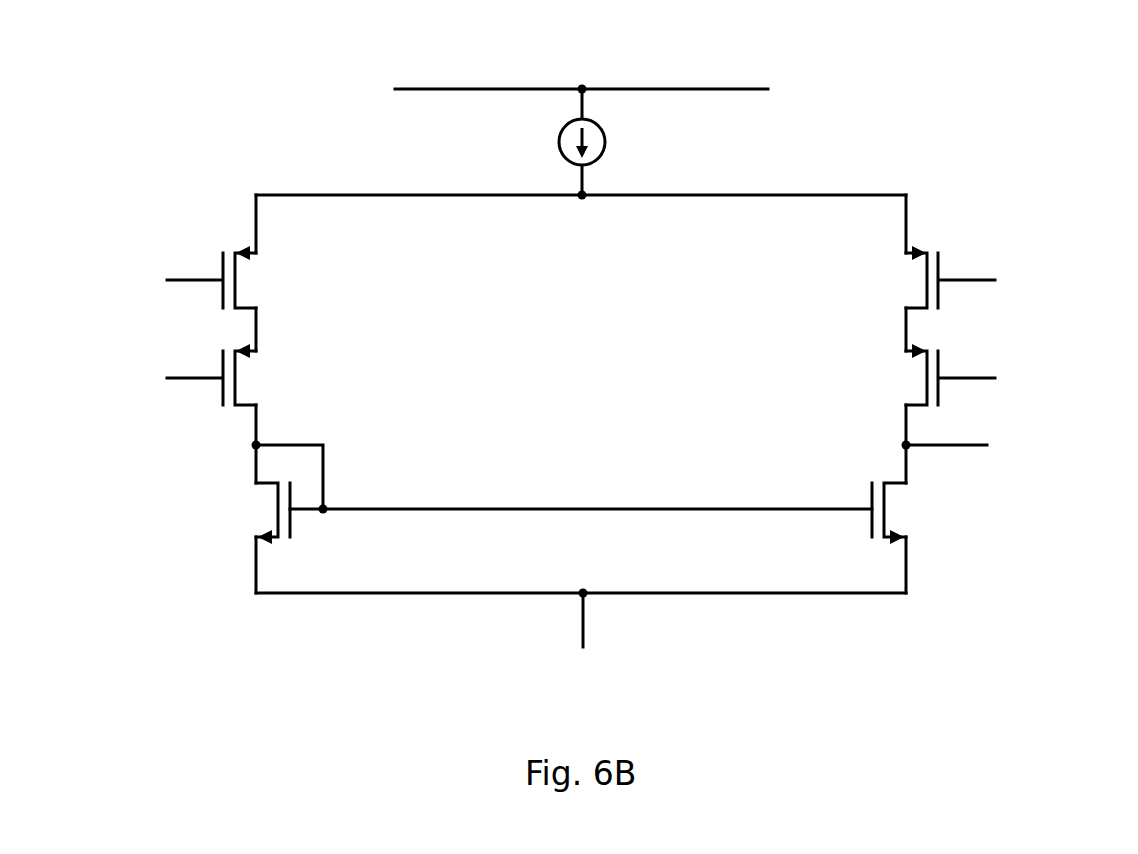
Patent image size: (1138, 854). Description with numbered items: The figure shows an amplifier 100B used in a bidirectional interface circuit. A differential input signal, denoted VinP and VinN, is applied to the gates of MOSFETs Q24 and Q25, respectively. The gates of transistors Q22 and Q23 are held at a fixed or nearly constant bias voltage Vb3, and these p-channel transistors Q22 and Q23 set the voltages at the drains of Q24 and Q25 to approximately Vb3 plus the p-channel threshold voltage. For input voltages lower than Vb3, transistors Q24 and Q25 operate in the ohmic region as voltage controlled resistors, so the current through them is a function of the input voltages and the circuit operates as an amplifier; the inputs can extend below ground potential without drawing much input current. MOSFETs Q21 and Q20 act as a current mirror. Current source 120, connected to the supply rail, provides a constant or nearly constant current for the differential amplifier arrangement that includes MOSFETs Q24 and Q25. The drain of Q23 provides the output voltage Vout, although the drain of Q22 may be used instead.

The amplifier 100B is at (613, 352).
The current source 120 is at (603, 131).
The MOSFET Q20 is at (241, 513).
The MOSFET Q21 is at (923, 513).
The transistor Q22 is at (248, 374).
The transistor Q23 is at (916, 374).
The MOSFET Q24 is at (248, 277).
The MOSFET Q25 is at (916, 277).